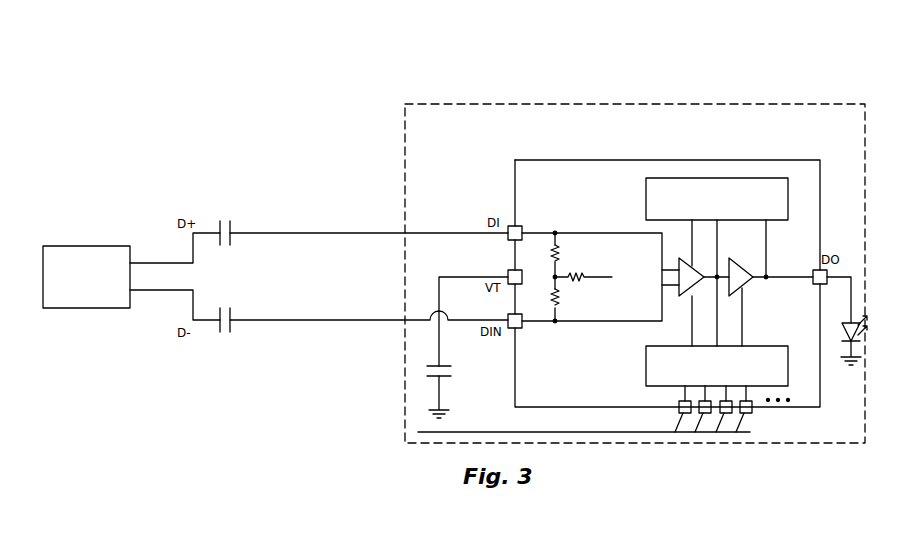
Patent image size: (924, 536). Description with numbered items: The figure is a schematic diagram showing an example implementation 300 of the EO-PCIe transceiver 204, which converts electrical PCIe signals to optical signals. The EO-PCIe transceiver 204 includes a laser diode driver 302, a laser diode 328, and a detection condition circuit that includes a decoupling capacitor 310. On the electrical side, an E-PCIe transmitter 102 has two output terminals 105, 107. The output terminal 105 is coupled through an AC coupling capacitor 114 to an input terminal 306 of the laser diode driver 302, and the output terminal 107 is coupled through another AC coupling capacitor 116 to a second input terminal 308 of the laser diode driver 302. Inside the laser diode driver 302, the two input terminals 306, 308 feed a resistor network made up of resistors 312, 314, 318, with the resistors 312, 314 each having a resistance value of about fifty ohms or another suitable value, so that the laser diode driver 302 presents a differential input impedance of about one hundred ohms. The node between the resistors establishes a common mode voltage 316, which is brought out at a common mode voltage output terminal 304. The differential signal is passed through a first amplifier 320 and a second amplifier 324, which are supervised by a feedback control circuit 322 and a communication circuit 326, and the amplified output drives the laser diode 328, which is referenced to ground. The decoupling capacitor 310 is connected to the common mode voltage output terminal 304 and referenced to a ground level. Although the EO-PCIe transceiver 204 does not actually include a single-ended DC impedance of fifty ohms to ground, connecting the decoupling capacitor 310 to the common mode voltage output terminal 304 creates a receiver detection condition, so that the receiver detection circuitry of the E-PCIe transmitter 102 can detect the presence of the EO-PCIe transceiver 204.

The example implementation 300 is at (853, 44).
The EO-PCIe transceiver 204 is at (438, 124).
The E-PCIe transmitter 102 is at (75, 304).
The output terminal 105 is at (165, 262).
The output terminal 107 is at (165, 292).
The AC coupling capacitor 114 is at (232, 226).
The AC coupling capacitor 116 is at (232, 332).
The laser diode driver 302 is at (512, 158).
The common mode voltage output terminal 304 is at (510, 270).
The input terminal 306 is at (510, 226).
The input terminal 308 is at (512, 328).
The decoupling capacitor 310 is at (451, 377).
The resistor 312 is at (560, 256).
The resistor 314 is at (560, 302).
The common mode voltage 316 is at (623, 266).
The resistor 318 is at (577, 281).
The amplifier 320 is at (666, 285).
The feedback control circuit 322 is at (728, 213).
The amplifier 324 is at (745, 290).
The communication circuit 326 is at (728, 380).
The laser diode 328 is at (866, 325).